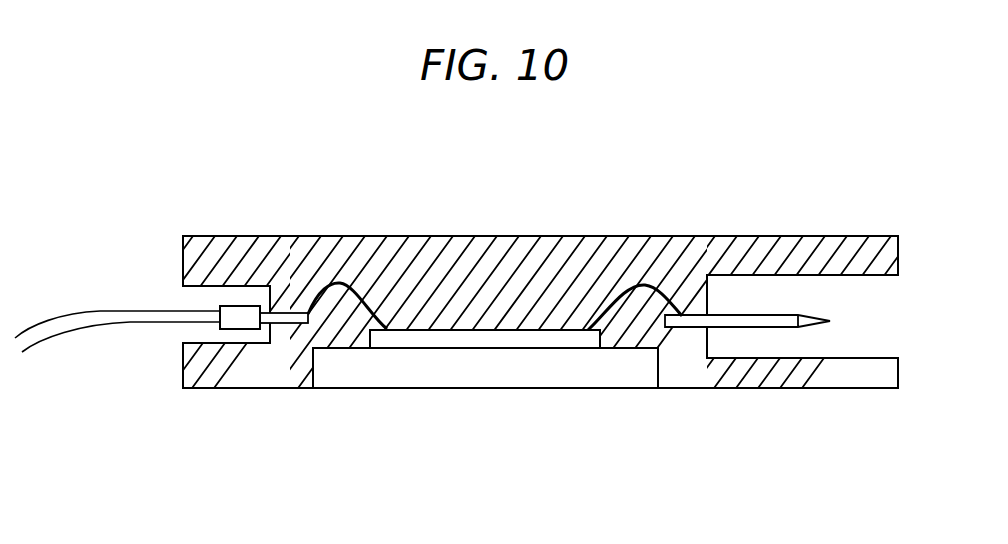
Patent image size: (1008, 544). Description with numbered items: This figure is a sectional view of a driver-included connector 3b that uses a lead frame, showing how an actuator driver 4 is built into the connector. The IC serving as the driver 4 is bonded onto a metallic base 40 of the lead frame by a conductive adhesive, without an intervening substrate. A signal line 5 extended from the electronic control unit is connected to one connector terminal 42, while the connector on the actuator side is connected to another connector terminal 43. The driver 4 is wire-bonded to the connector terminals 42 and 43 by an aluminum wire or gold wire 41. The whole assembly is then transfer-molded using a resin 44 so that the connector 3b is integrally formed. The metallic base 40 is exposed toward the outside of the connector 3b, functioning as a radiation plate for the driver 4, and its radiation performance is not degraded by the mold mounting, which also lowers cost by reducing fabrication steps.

The connector 3b is at (522, 236).
The actuator driver 4 is at (470, 342).
The metallic base 40 is at (567, 374).
The aluminum wire or gold wire 41 is at (344, 281).
The connector terminal 42 is at (286, 320).
The connector terminal 43 is at (769, 320).
The resin 44 is at (416, 262).
The signal line 5 is at (144, 320).